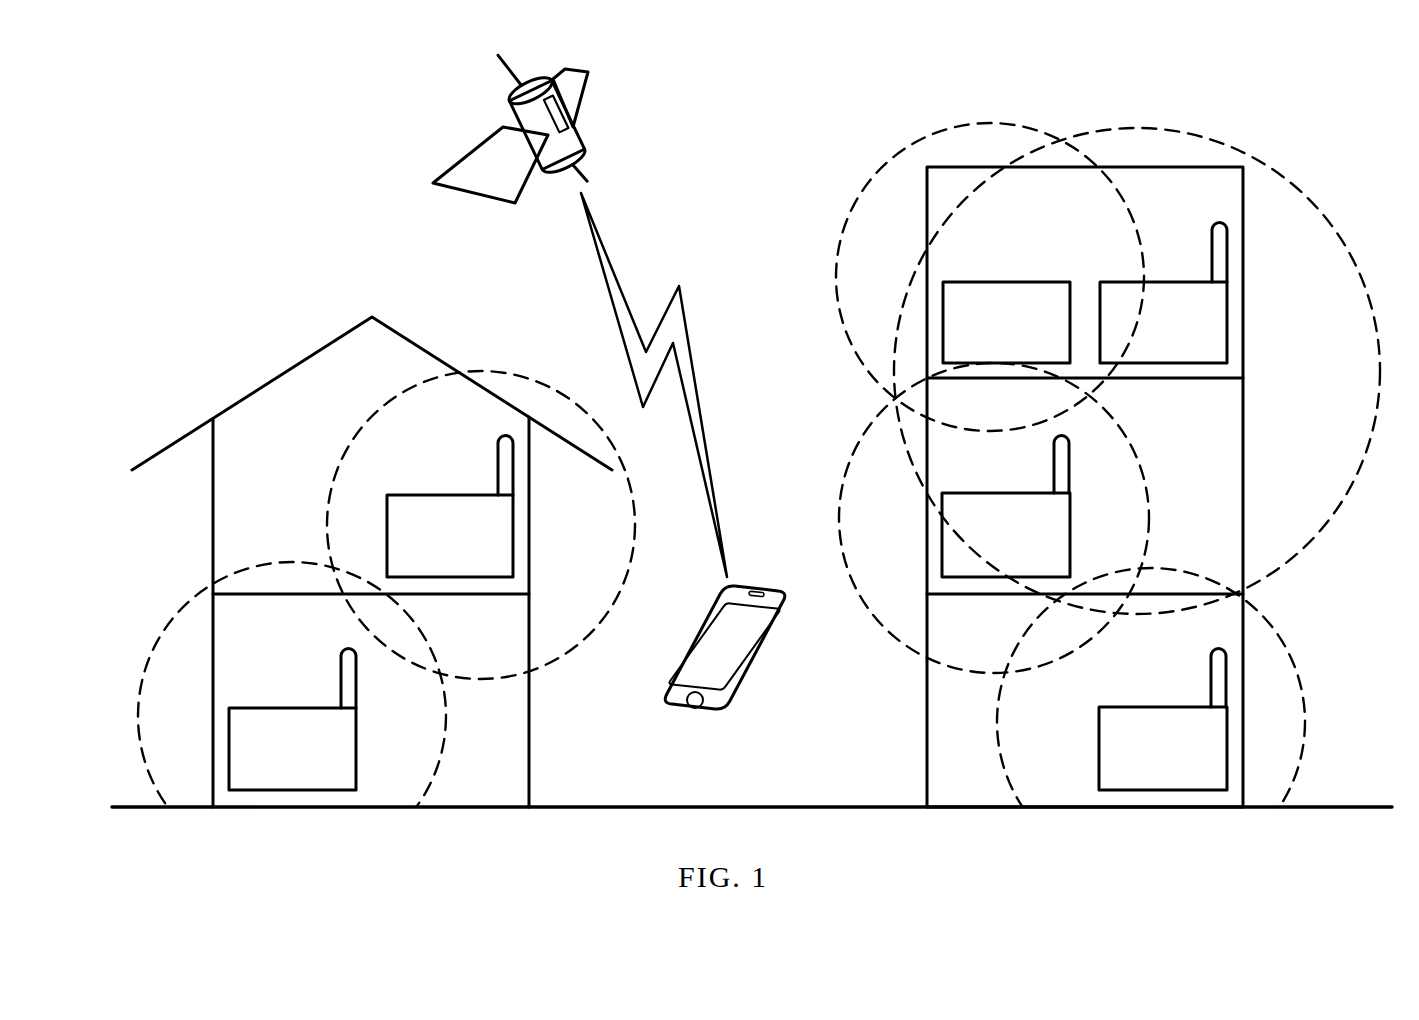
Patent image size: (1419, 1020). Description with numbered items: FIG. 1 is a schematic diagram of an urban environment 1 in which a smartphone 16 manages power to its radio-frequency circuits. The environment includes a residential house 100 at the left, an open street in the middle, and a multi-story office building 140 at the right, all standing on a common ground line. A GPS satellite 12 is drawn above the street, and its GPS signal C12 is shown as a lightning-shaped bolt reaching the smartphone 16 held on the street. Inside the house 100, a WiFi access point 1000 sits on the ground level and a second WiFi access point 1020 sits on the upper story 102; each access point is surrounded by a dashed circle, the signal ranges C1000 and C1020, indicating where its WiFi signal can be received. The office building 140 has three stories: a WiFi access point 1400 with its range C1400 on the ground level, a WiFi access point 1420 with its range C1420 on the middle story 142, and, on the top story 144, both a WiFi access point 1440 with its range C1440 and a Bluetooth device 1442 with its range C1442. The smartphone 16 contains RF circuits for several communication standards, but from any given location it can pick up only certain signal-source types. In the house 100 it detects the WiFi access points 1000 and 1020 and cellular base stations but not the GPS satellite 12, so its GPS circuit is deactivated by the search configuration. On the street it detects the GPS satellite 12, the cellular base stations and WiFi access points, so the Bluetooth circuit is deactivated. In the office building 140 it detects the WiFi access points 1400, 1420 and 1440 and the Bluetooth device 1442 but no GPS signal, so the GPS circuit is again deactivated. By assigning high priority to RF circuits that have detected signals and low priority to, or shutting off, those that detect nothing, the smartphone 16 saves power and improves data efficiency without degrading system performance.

The urban environment 1 is at (729, 126).
The GPS satellite 12 is at (468, 153).
The satellite signal coverage C12 is at (613, 275).
The smartphone 16 is at (763, 648).
The house 100 is at (530, 750).
The upper floor of house 102 is at (530, 528).
The WiFi AP 1000 is at (229, 708).
The coverage area of access point AP0 C1000 is at (165, 622).
The WiFi AP 1020 is at (387, 495).
The coverage area of access point AP1 C1020 is at (507, 372).
The building 140 is at (926, 750).
The middle floor of building 142 is at (1243, 486).
The top story 144 is at (1243, 272).
The WiFi AP 1400 is at (1099, 707).
The coverage area of access point AP2 C1400 is at (1276, 644).
The WiFi AP 1420 is at (942, 493).
The coverage area of access point AP3 C1420 is at (850, 468).
The WiFi AP 1440 is at (1227, 320).
The coverage area of access point AP4 C1440 is at (1290, 183).
The Bluetooth device 1442 is at (943, 282).
The coverage area of Bluetooth device BT0 C1442 is at (855, 208).